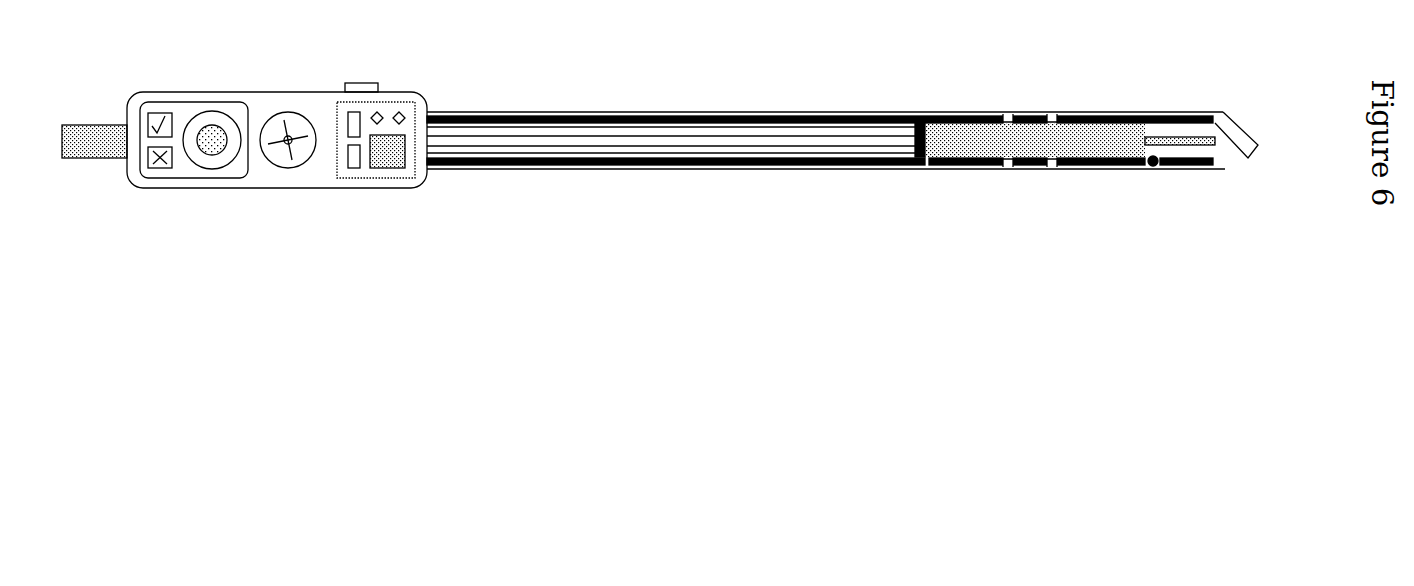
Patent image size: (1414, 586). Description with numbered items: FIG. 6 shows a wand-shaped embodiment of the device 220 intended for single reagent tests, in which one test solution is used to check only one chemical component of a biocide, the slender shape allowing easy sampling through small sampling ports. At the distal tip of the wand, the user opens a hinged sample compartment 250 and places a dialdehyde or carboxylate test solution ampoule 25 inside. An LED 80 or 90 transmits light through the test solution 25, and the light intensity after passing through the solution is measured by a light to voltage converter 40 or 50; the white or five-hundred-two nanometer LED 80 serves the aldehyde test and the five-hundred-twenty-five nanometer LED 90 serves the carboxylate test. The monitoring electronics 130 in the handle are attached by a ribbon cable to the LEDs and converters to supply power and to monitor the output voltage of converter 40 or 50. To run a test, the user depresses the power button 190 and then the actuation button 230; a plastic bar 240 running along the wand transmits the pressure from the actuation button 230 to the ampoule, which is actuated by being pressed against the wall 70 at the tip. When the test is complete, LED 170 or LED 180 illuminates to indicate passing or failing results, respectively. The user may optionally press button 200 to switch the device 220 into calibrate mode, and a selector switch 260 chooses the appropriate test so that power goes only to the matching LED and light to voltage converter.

The test solution ampoule 25 is at (1113, 145).
The light to voltage converter 40 is at (1007, 169).
The light to voltage converter 50 is at (1052, 169).
The wall 70 is at (1233, 130).
The LED 80 is at (1008, 114).
The LED 90 is at (1052, 114).
The monitoring electronics 130 is at (385, 165).
The LED 170 is at (165, 117).
The LED 180 is at (167, 167).
The power button 190 is at (206, 163).
The button 200 is at (273, 163).
The device 220 is at (636, 180).
The actuation button 230 is at (89, 158).
The plastic bar 240 is at (637, 140).
The hinged sample compartment 250 is at (962, 160).
The selector switch 260 is at (363, 83).